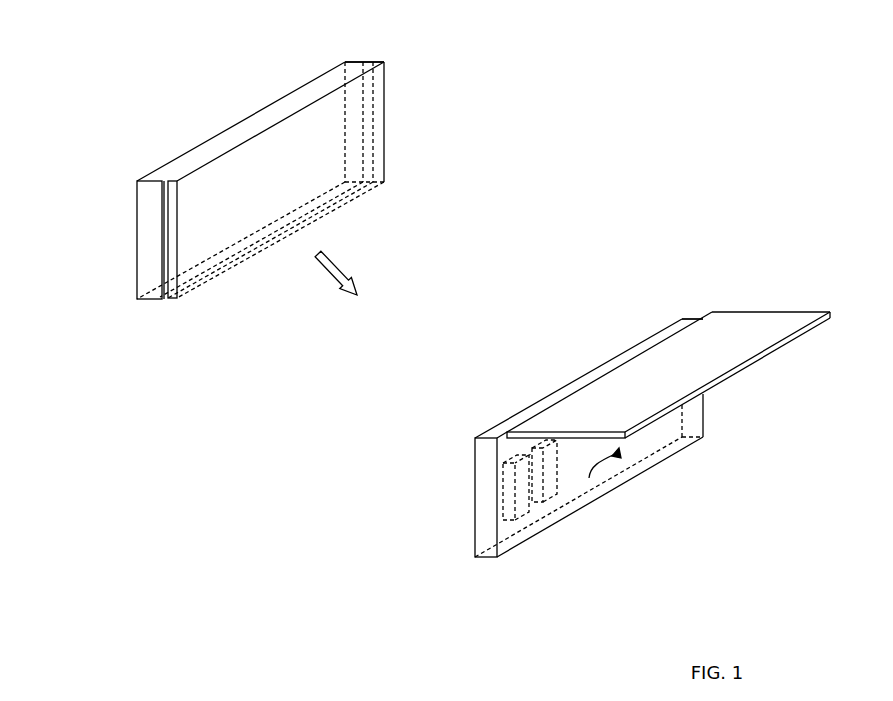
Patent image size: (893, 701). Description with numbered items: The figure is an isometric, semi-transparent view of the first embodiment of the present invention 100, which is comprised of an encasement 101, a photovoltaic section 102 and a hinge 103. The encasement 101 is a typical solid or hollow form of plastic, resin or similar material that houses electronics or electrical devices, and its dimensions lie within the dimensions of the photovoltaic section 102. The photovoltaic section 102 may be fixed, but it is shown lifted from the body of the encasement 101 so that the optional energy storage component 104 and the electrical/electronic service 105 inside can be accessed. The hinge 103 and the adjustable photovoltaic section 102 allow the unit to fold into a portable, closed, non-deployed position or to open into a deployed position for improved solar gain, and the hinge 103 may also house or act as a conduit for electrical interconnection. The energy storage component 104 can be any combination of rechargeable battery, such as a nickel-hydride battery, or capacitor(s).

The present invention 100 is at (105, 87).
The encasement 101 is at (153, 297).
The photovoltaic section 102 is at (168, 300).
The hinge 103 is at (347, 62).
The energy storage component 104 is at (522, 500).
The electrical/electronic service 105 is at (552, 477).